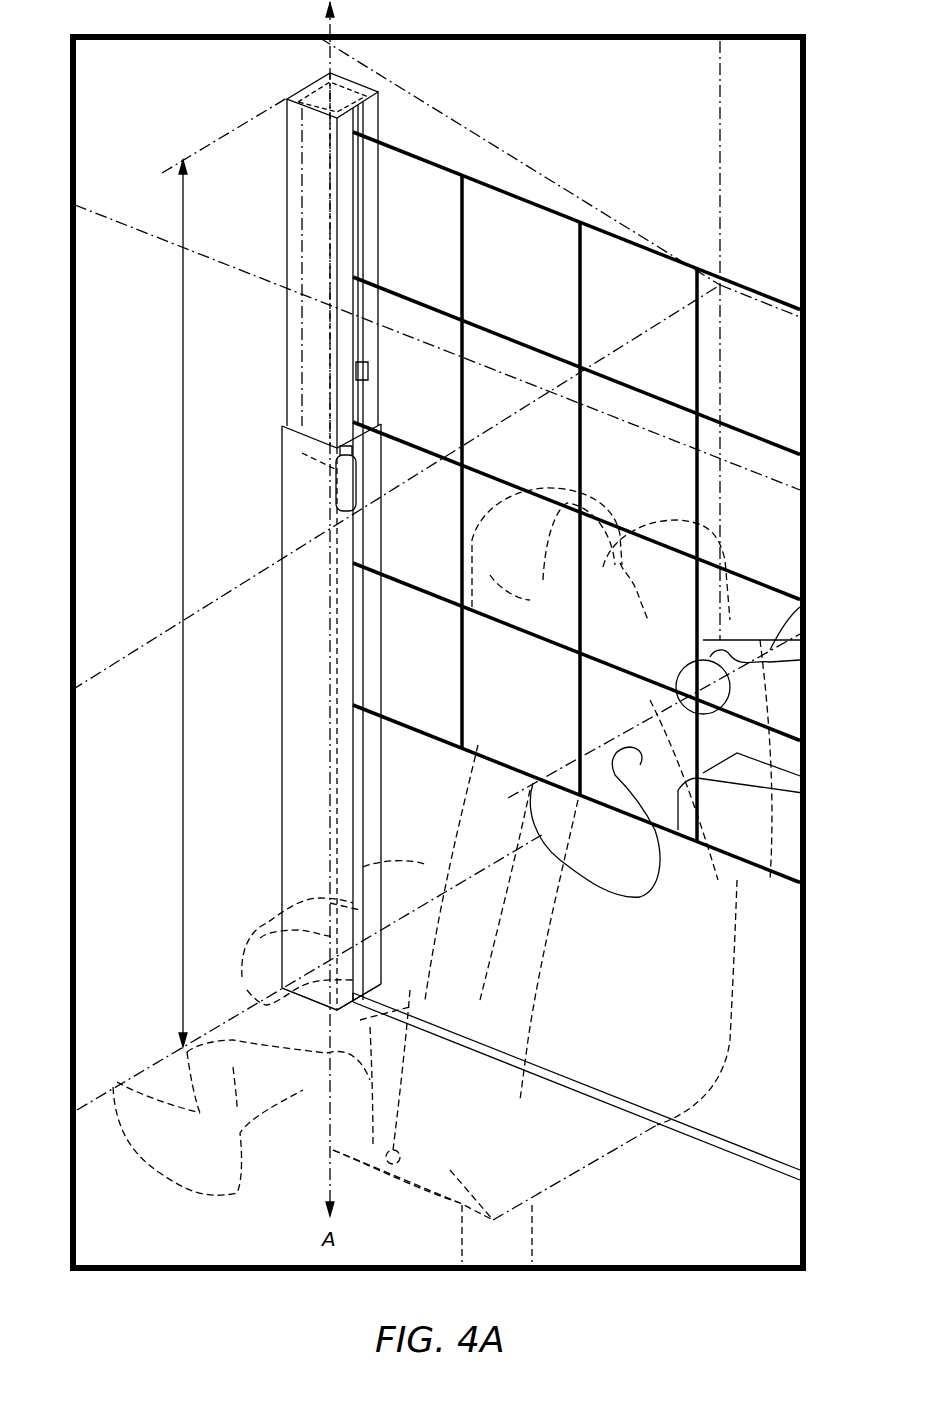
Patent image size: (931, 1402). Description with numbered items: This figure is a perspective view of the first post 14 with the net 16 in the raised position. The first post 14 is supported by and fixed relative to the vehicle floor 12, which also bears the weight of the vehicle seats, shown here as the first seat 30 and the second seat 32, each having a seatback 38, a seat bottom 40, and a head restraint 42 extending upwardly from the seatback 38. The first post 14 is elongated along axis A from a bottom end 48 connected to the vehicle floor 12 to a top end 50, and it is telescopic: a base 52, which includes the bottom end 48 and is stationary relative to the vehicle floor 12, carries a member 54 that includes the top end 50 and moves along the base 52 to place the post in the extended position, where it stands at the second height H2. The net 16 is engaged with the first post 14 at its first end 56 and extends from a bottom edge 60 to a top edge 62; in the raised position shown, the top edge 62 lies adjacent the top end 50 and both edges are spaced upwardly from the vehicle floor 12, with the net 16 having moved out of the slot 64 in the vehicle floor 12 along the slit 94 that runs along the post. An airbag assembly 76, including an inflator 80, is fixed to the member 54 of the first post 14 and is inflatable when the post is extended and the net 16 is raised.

The vehicle floor 12 is at (143, 1227).
The first post 14 is at (282, 540).
The net 16 is at (431, 736).
The first seat 30 is at (575, 1172).
The second seat 32 is at (781, 888).
The seatback 38 is at (677, 1017).
The seat bottom 40 is at (300, 1090).
The head restraint 42 is at (680, 528).
The bottom end 48 is at (280, 1000).
The top end 50 is at (310, 94).
The base 52 is at (280, 752).
The member 54 is at (284, 212).
The first end 56 is at (384, 221).
The bottom edge 60 is at (618, 880).
The top edge 62 is at (514, 192).
The slot 64 is at (757, 1162).
The airbag assembly 76 is at (300, 352).
The inflator 80 is at (335, 498).
The slit 94 is at (368, 372).
The second height H2 is at (185, 603).